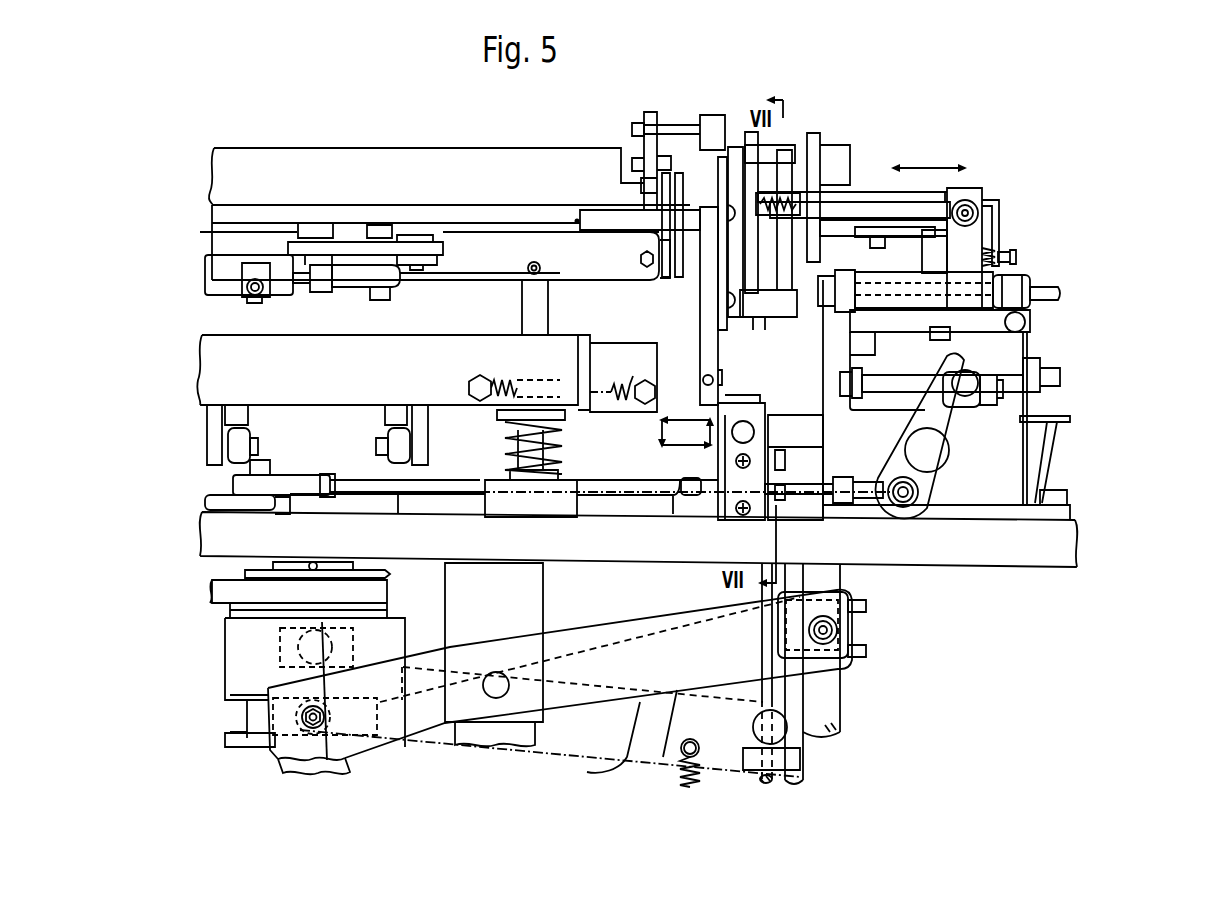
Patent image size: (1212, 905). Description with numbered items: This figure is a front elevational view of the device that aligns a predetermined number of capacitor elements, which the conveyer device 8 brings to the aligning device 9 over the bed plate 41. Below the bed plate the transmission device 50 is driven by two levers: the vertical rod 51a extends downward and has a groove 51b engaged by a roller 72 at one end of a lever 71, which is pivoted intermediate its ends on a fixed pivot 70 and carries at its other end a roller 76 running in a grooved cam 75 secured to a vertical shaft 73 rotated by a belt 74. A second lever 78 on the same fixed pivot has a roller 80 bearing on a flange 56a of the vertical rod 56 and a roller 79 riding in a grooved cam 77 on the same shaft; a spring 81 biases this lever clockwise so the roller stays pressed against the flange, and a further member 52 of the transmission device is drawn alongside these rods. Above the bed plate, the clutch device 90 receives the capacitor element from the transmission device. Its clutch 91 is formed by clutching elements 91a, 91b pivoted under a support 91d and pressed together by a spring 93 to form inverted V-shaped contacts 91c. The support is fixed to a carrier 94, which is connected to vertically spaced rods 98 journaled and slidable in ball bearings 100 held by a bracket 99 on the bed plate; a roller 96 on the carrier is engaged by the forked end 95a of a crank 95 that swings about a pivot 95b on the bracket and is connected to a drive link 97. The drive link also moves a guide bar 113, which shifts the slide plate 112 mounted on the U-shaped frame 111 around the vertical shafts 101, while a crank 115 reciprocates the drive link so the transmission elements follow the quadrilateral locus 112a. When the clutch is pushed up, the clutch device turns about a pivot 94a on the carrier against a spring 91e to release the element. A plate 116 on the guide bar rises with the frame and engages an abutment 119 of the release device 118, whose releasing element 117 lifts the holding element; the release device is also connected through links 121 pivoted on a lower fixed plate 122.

The aligning device 9 is at (315, 144).
The releasing element 117 is at (372, 148).
The links 121 is at (664, 233).
The release device 118 is at (641, 150).
The plate 116 is at (717, 170).
The abutment 119 is at (735, 142).
The guide bar 113 is at (685, 360).
The clutch 91 is at (778, 172).
The clutching element 91a is at (748, 205).
The inverted V-shaped contacts 91c is at (790, 160).
The spring 93 is at (805, 205).
The support 91d is at (853, 193).
The transmission device 50 is at (815, 150).
The conveyer device 8 is at (982, 100).
The clutch device 90 is at (886, 174).
The clutching element 91b is at (880, 195).
The carrier 94 is at (983, 240).
The pivot 94a is at (998, 198).
The spring 91e is at (1001, 252).
The rods 98 is at (935, 275).
The ball bearings 100 is at (866, 296).
The U-shaped frame 111 is at (465, 336).
The lower fixed plate 122 is at (578, 282).
The slide plate 112 is at (617, 356).
The vertical shafts 101 is at (547, 464).
The quadrilateral locus 112a is at (680, 447).
The crank 115 is at (207, 497).
The bed plate 41 is at (1060, 575).
The roller 96 is at (1003, 380).
The crank 95 is at (950, 461).
The forked end 95a is at (963, 440).
The pivot 95b is at (1000, 469).
The bracket 99 is at (1035, 512).
The drive link 97 is at (877, 504).
The belt 74 is at (218, 605).
The grooved cam 77 is at (290, 655).
The roller 79 is at (285, 657).
The grooved cam 75 is at (245, 715).
The roller 76 is at (240, 757).
The groove 51b is at (865, 624).
The vertical shaft 73 is at (348, 762).
The vertical rod 51a is at (848, 578).
The fixed pivot 70 is at (497, 718).
The lever 71 is at (507, 695).
The lever 78 is at (590, 772).
The spring 81 is at (683, 778).
The roller 72 is at (857, 640).
The vertical rod 56 is at (790, 687).
The shaft 52 is at (842, 707).
The roller 80 is at (790, 732).
The flange 56a is at (800, 760).